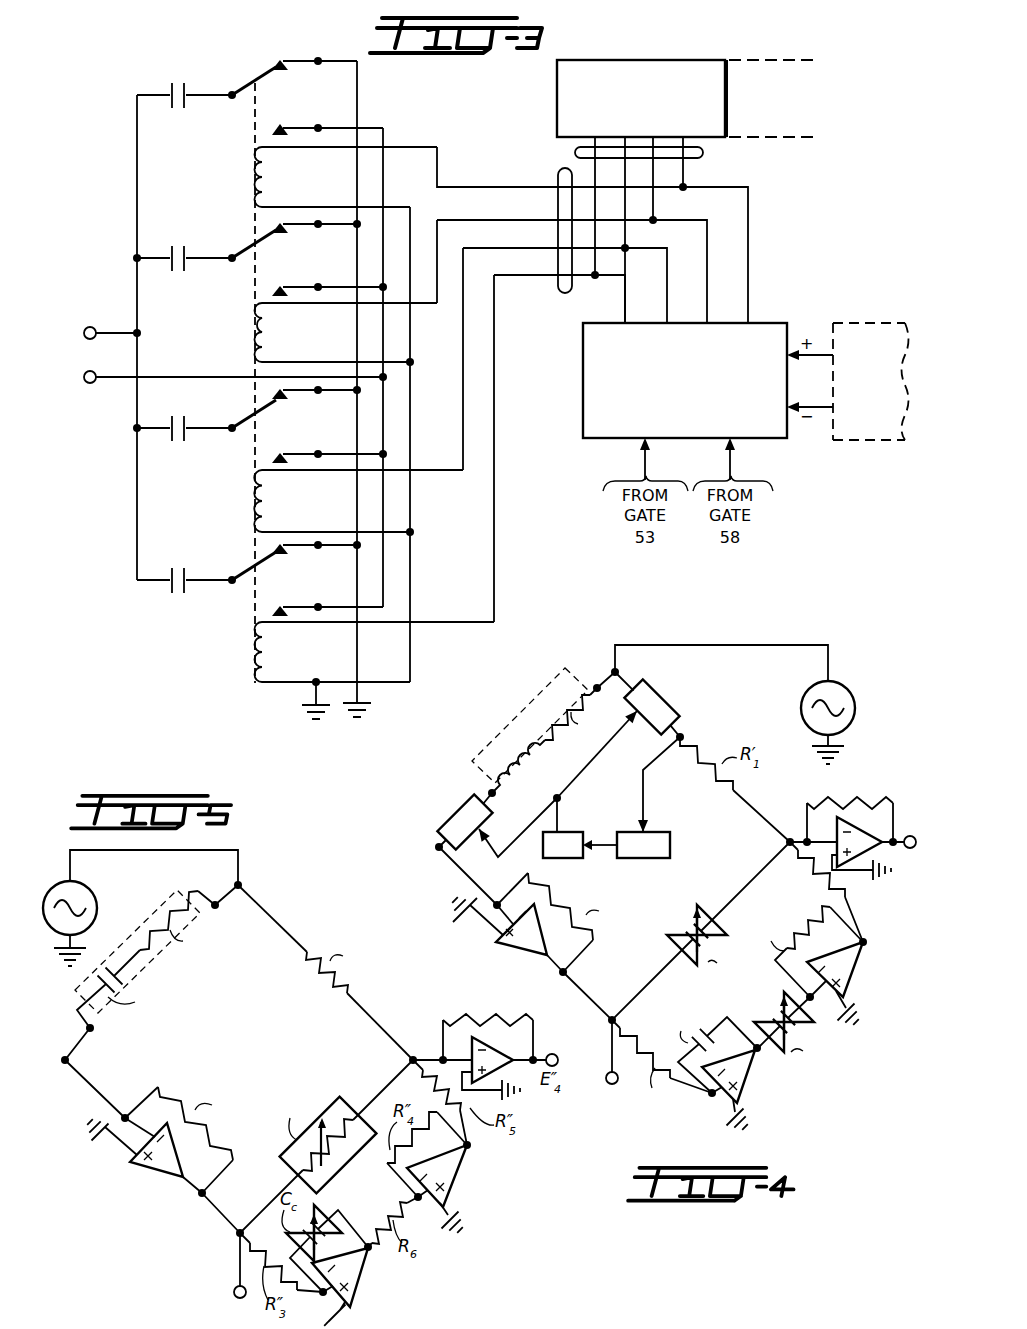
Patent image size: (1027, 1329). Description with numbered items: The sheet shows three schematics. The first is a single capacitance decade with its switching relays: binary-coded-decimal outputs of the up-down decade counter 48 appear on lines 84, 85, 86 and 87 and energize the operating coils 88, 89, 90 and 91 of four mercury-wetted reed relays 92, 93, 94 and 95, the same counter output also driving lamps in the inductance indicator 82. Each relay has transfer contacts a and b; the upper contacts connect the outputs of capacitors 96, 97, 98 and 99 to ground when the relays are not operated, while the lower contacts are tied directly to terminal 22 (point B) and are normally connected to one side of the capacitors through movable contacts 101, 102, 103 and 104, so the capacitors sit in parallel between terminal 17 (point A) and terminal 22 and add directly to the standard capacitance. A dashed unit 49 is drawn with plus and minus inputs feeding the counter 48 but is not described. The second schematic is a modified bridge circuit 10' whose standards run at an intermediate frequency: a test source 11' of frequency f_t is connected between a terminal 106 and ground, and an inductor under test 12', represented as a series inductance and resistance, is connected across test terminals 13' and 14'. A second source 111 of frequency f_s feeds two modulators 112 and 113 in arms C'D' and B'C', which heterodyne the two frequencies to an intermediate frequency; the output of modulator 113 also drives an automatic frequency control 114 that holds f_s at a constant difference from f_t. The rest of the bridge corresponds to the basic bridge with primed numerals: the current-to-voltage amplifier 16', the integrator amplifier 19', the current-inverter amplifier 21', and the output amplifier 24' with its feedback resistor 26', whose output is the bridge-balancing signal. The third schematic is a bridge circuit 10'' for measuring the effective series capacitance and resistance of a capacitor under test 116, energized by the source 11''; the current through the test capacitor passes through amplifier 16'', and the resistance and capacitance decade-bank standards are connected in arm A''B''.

In FIG. 3, the terminal 17 is at (89, 330).
In FIG. 3, the terminal 22 is at (96, 381).
In FIG. 3, the up-down decade counter 48 is at (583, 386).
In FIG. 3, the display / readout unit 49 is at (853, 325).
In FIG. 3, the indicator 82 is at (628, 54).
In FIG. 3, the line 84 is at (742, 290).
In FIG. 3, the line 85 is at (702, 290).
In FIG. 3, the line 86 is at (661, 290).
In FIG. 3, the line 87 is at (624, 290).
In FIG. 3, the operating coil 88 is at (253, 168).
In FIG. 3, the operating coil 89 is at (253, 325).
In FIG. 3, the operating coil 90 is at (253, 494).
In FIG. 3, the operating coil 91 is at (253, 651).
In FIG. 3, the relay 92 is at (310, 190).
In FIG. 3, the relay 93 is at (310, 346).
In FIG. 3, the relay 94 is at (310, 515).
In FIG. 3, the relay 95 is at (310, 666).
In FIG. 3, the capacitor 96 is at (170, 84).
In FIG. 3, the capacitor 97 is at (170, 253).
In FIG. 3, the capacitor 98 is at (170, 424).
In FIG. 3, the capacitor 99 is at (170, 576).
In FIG. 3, the movable contact 101 is at (250, 80).
In FIG. 3, the movable contact 102 is at (251, 246).
In FIG. 3, the movable contact 103 is at (250, 413).
In FIG. 3, the movable contact 104 is at (254, 567).
In FIG. 4, the modified bridge circuit 10' is at (607, 881).
In FIG. 4, the test AC voltage source 11' is at (749, 704).
In FIG. 4, the inductor under test 12' is at (535, 725).
In FIG. 4, the test terminal 13' is at (583, 667).
In FIG. 4, the test terminal 14' is at (495, 769).
In FIG. 4, the high-gain amplifier 16' is at (536, 924).
In FIG. 4, the integrator amplifier 19' is at (700, 1067).
In FIG. 4, the current inverter amplifier 21' is at (825, 955).
In FIG. 4, the high-gain amplifier 24' is at (856, 843).
In FIG. 4, the feedback resistor 26' is at (850, 808).
In FIG. 4, the terminal 106 is at (620, 672).
In FIG. 4, the second AC voltage source 111 is at (572, 832).
In FIG. 4, the modulator 112 is at (455, 817).
In FIG. 4, the modulator 113 is at (663, 697).
In FIG. 4, the automatic frequency control 114 is at (671, 846).
In FIG. 5, the bridge circuit 10'' is at (229, 1091).
In FIG. 5, the AC source 11'' is at (140, 906).
In FIG. 5, the high-gain amplifier 16'' is at (160, 1144).
In FIG. 5, the capacitor under test 116 is at (126, 932).